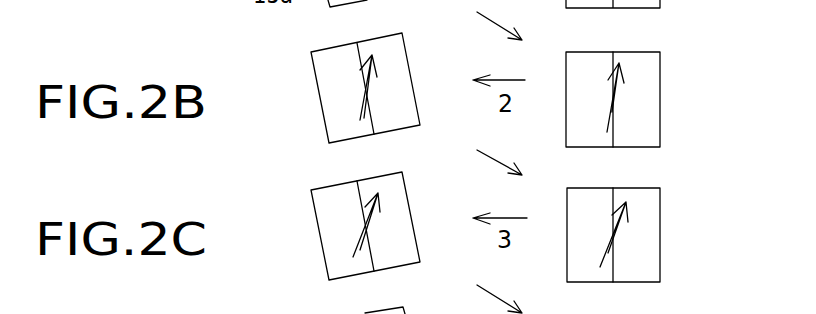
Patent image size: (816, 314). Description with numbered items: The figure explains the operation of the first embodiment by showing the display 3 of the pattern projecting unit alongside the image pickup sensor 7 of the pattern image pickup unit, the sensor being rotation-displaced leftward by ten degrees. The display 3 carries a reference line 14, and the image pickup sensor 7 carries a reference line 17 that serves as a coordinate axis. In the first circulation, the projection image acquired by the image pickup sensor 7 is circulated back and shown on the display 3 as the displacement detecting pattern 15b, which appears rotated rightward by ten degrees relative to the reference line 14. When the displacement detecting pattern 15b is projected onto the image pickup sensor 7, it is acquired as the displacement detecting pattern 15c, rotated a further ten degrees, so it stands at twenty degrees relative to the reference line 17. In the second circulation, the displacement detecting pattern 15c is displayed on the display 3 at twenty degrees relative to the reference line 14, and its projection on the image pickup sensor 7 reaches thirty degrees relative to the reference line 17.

In FIG. 2B, the display 3 is at (660, 75).
In FIG. 2C, the display 3 is at (662, 200).
In FIG. 2B, the image pickup sensor 7 is at (410, 57).
In FIG. 2C, the image pickup sensor 7 is at (317, 222).
In FIG. 2B, the reference line 14 is at (640, 57).
In FIG. 2C, the reference line 14 is at (615, 268).
In FIG. 2B, the displacement detecting pattern 15b is at (360, 107).
In FIG. 2C, the displacement detecting pattern 15c is at (353, 246).
In FIG. 2B, the reference line 17 is at (373, 118).